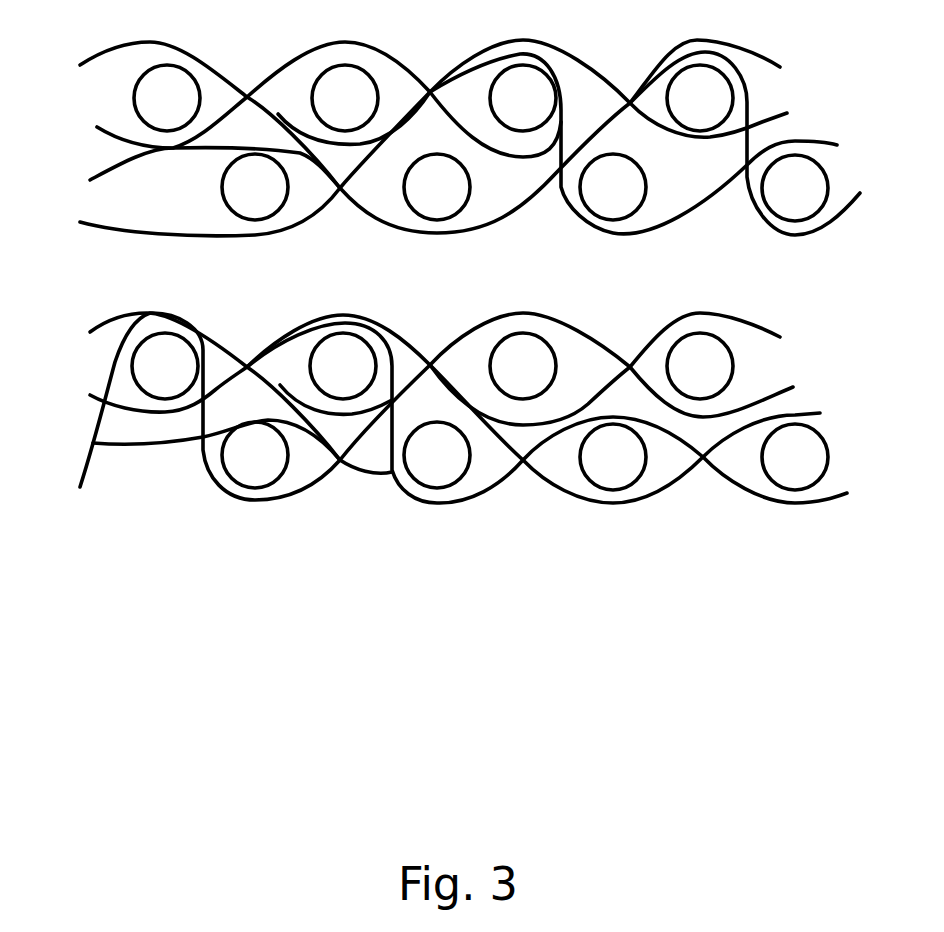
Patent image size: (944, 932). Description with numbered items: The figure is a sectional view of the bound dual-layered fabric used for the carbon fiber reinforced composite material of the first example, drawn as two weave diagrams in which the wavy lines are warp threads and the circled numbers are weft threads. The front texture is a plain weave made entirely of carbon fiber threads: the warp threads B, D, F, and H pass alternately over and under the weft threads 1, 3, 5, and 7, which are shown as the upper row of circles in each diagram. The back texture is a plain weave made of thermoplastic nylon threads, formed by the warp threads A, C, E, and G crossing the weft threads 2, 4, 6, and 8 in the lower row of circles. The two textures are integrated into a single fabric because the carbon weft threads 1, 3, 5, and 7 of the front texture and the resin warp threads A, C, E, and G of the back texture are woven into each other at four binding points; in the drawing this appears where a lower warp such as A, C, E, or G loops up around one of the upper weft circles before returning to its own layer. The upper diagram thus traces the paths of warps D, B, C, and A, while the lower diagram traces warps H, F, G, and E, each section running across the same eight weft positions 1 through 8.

The weft thread 1 is at (166, 233).
The weft thread 2 is at (255, 322).
The weft thread 3 is at (344, 233).
The weft thread 4 is at (437, 322).
The weft thread 5 is at (523, 233).
The weft thread 6 is at (613, 323).
The weft thread 7 is at (700, 233).
The weft thread 8 is at (795, 323).
The warp thread A is at (420, 172).
The warp thread B is at (459, 143).
The warp thread C is at (445, 144).
The warp thread D is at (411, 65).
The warp thread E is at (336, 414).
The warp thread F is at (450, 413).
The warp thread G is at (431, 434).
The warp thread H is at (416, 377).